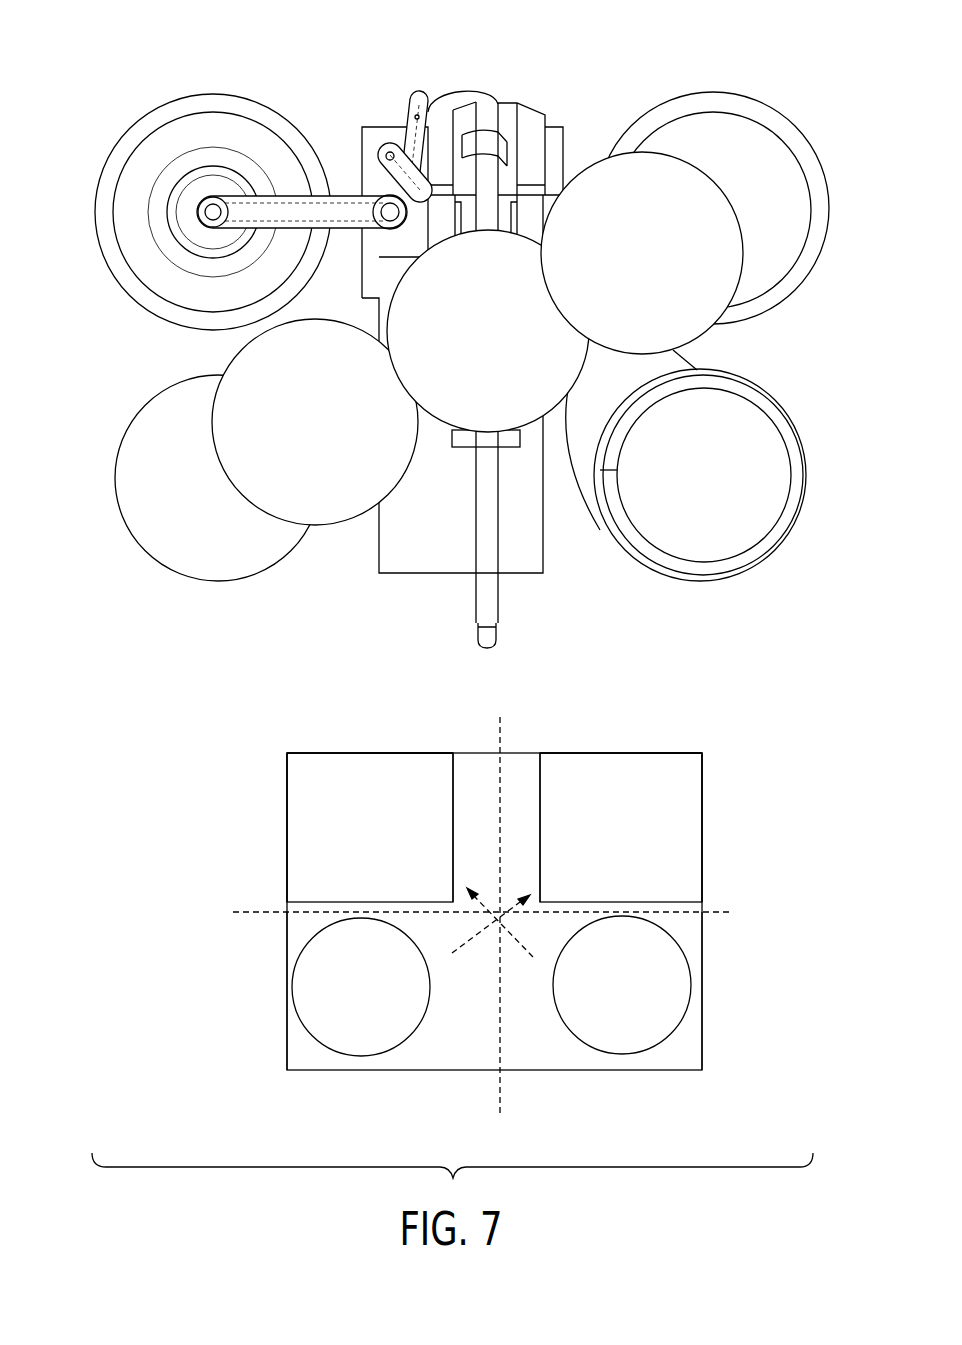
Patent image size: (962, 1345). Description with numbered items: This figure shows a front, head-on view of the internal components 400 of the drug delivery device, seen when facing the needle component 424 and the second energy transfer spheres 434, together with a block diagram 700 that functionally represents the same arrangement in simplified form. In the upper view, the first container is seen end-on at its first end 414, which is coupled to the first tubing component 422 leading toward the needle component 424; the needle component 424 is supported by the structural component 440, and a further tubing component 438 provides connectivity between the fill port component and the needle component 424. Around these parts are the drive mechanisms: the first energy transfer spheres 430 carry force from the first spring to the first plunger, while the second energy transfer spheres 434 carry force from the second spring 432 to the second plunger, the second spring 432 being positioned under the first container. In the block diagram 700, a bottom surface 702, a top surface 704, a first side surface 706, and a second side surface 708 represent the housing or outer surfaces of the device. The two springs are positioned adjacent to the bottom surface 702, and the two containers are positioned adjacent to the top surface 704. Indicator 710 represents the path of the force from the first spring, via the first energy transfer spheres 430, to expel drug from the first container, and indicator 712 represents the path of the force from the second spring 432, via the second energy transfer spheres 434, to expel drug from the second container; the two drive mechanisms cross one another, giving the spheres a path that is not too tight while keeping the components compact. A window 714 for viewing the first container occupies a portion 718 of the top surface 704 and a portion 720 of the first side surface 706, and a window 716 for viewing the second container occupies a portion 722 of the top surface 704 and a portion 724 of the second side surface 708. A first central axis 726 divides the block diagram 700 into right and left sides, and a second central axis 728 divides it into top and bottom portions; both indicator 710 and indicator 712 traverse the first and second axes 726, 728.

The internal components 400 is at (118, 82).
The first end 414 is at (213, 153).
The first tubing component 422 is at (330, 205).
The needle component 424 is at (488, 610).
The first energy transfer spheres 430 is at (690, 356).
The second spring 432 is at (363, 1057).
The second energy transfer spheres 434 is at (352, 505).
The tubing component 438 is at (392, 157).
The structural component 440 is at (415, 555).
The block diagram 700 is at (210, 857).
The bottom surface 702 is at (443, 1070).
The top surface 704 is at (463, 753).
The first side surface 706 is at (287, 985).
The second side surface 708 is at (703, 998).
The indicator 710 is at (522, 945).
The indicator 712 is at (465, 945).
The window 714 is at (325, 762).
The window 716 is at (620, 768).
The portion of the top surface 718 is at (405, 755).
The portion of the side surface 720 is at (287, 790).
The portion of the top surface 722 is at (672, 753).
The portion of the side surface 724 is at (705, 790).
The first central axis 726 is at (503, 730).
The second central axis 728 is at (717, 912).